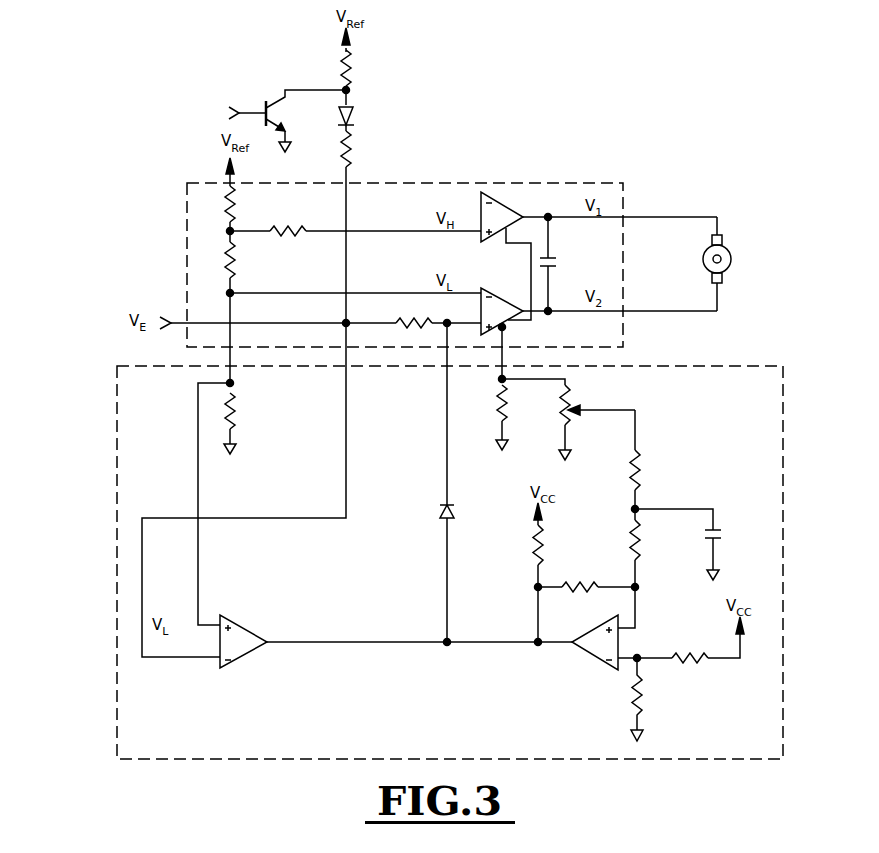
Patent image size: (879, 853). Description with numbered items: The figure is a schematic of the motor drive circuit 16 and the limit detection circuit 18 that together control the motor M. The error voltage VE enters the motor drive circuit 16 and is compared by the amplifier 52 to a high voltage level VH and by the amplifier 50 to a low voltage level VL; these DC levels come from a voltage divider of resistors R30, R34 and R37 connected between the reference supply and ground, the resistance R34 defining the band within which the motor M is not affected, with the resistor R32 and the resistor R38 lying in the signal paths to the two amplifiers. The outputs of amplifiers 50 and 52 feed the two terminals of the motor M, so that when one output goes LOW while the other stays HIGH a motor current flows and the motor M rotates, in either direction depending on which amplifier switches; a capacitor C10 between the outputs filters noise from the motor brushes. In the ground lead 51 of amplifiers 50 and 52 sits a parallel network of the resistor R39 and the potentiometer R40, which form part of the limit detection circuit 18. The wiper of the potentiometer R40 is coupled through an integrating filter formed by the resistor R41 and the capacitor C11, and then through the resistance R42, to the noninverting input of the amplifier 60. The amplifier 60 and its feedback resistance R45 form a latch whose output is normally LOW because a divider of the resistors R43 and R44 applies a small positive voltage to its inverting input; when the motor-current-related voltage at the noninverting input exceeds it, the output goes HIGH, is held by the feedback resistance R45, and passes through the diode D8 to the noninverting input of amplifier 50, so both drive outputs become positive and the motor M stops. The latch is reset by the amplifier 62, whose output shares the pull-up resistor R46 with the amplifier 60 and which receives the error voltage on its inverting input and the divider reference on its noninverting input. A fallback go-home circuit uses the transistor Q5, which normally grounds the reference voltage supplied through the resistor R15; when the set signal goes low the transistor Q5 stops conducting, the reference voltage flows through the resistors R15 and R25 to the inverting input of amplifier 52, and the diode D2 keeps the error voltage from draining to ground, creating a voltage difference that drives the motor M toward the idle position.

The motor drive circuit 16 is at (597, 175).
The limit detection circuit 18 is at (777, 367).
The amplifier 50 is at (516, 304).
The ground lead 51 is at (531, 253).
The amplifier 52 is at (514, 215).
The amplifier 60 is at (590, 662).
The amplifier 62 is at (250, 628).
The resistor R15 is at (365, 68).
The resistor R25 is at (365, 149).
The resistor R30 is at (248, 203).
The resistor R32 is at (286, 221).
The resistor R34 is at (248, 260).
The resistor R37 is at (236, 417).
The resistor R38 is at (414, 312).
The resistor R39 is at (516, 390).
The potentiometer R40 is at (597, 422).
The resistor R41 is at (640, 478).
The resistance R42 is at (654, 540).
The resistor R43 is at (673, 651).
The resistor R44 is at (642, 702).
The feedback resistance R45 is at (580, 578).
The pull-up resistor R46 is at (543, 531).
The capacitor C10 is at (552, 258).
The capacitor C11 is at (718, 535).
The diode D2 is at (353, 117).
The diode D8 is at (451, 505).
The transistor Q5 is at (247, 126).
The motor M is at (730, 250).